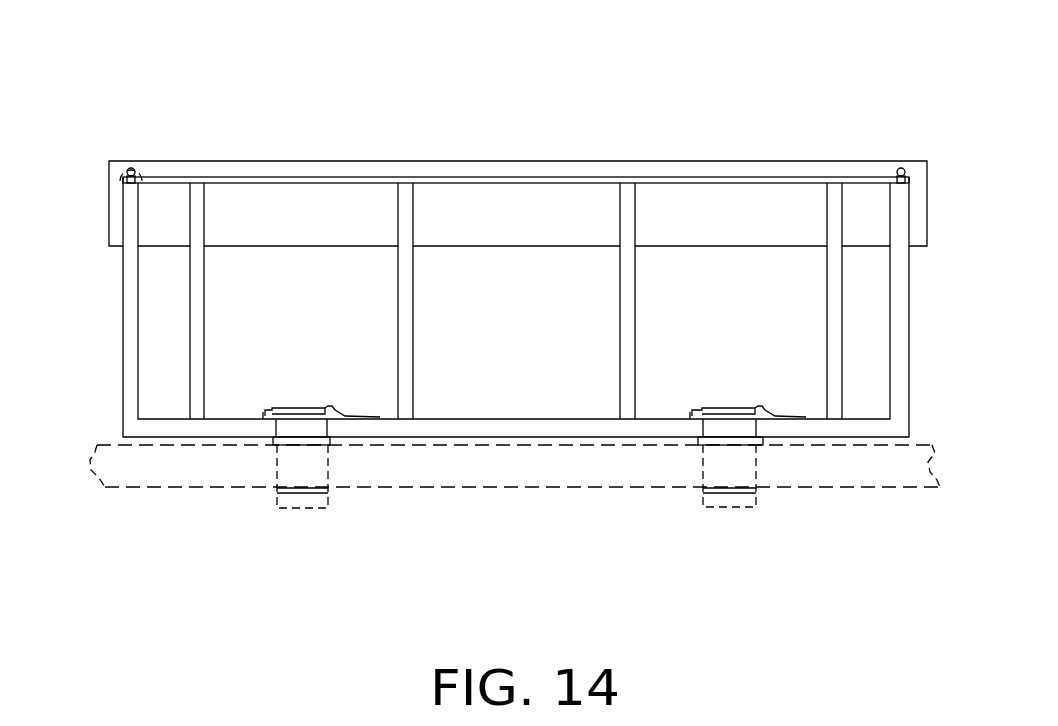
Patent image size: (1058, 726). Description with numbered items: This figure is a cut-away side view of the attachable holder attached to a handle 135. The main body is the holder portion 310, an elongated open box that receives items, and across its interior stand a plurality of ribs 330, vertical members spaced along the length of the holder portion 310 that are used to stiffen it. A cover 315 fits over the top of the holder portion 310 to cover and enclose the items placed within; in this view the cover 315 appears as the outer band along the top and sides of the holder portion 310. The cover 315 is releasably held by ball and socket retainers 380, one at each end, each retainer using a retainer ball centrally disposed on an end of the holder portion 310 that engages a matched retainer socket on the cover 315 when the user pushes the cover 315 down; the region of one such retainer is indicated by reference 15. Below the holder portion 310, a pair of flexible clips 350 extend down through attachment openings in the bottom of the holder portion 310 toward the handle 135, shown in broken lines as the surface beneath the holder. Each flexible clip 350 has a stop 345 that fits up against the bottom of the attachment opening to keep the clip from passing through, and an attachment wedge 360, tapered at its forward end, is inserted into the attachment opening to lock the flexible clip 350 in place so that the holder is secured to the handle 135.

The pivot connection 15 is at (136, 169).
The handle 135 is at (207, 468).
The holder portion 310 is at (123, 278).
The cover 315 is at (497, 168).
The ribs 330 is at (198, 300).
The stop 345 is at (330, 428).
The flexible clip 350 is at (302, 498).
The attachment wedge 360 is at (268, 411).
The ball and socket retainer 380 is at (128, 168).